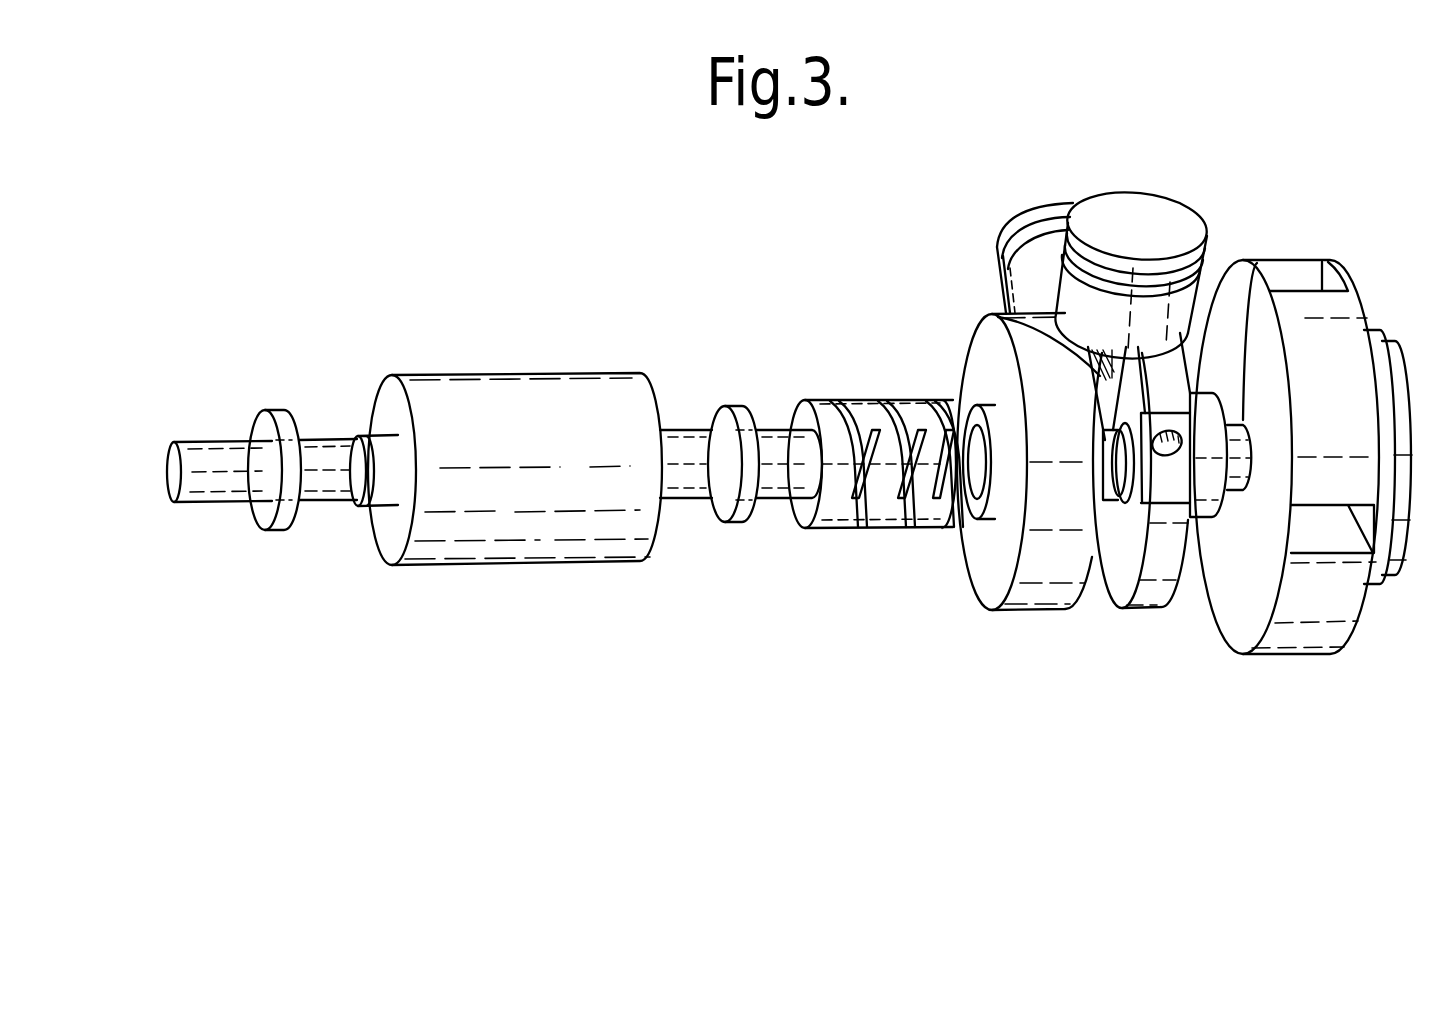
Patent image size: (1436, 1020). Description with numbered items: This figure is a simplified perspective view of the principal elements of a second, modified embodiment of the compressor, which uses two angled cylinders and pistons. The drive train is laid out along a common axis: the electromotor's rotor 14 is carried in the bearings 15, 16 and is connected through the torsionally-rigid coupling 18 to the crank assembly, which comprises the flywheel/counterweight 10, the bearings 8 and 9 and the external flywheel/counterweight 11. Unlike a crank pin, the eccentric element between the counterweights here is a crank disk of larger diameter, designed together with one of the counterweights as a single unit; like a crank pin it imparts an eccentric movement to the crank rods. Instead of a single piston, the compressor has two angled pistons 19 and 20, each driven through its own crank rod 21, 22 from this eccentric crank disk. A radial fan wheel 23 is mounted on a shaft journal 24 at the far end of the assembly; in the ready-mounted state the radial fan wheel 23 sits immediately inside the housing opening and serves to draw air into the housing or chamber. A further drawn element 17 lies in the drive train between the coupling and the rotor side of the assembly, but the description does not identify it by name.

The bearing 8 is at (992, 508).
The bearing 9 is at (1216, 513).
The flywheel/counterweight 10 is at (985, 362).
The external flywheel/counterweight 11 is at (1150, 587).
The rotor 14 is at (467, 547).
The bearing 15 is at (278, 420).
The bearing 16 is at (743, 422).
The shaft 17 is at (784, 490).
The torsionally-rigid coupling 18 is at (875, 413).
The piston 19 is at (1020, 240).
The piston 20 is at (1165, 222).
The crank rod 21 is at (1017, 318).
The crank rod 22 is at (1128, 459).
The radial fan wheel 23 is at (1349, 306).
The shaft journal 24 is at (1255, 269).